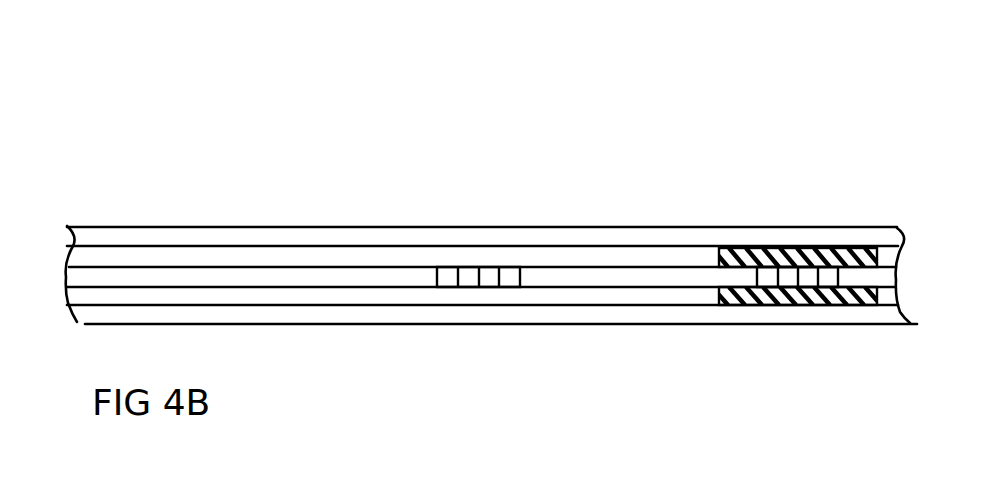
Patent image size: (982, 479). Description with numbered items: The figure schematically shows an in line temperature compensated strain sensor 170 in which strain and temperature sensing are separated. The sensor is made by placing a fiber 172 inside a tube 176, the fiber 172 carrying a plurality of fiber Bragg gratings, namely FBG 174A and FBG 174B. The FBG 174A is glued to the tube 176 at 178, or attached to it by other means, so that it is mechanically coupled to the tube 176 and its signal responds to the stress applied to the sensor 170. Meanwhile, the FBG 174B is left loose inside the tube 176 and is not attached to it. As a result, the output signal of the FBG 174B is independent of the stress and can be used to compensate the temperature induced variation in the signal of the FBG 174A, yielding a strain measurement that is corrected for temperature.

The in line temperature compensated strain sensor 170 is at (491, 253).
The fiber 172 is at (243, 286).
The FBG 174A is at (770, 281).
The FBG 174B is at (459, 285).
The tube 176 is at (223, 325).
The glue attachment 178 is at (779, 307).